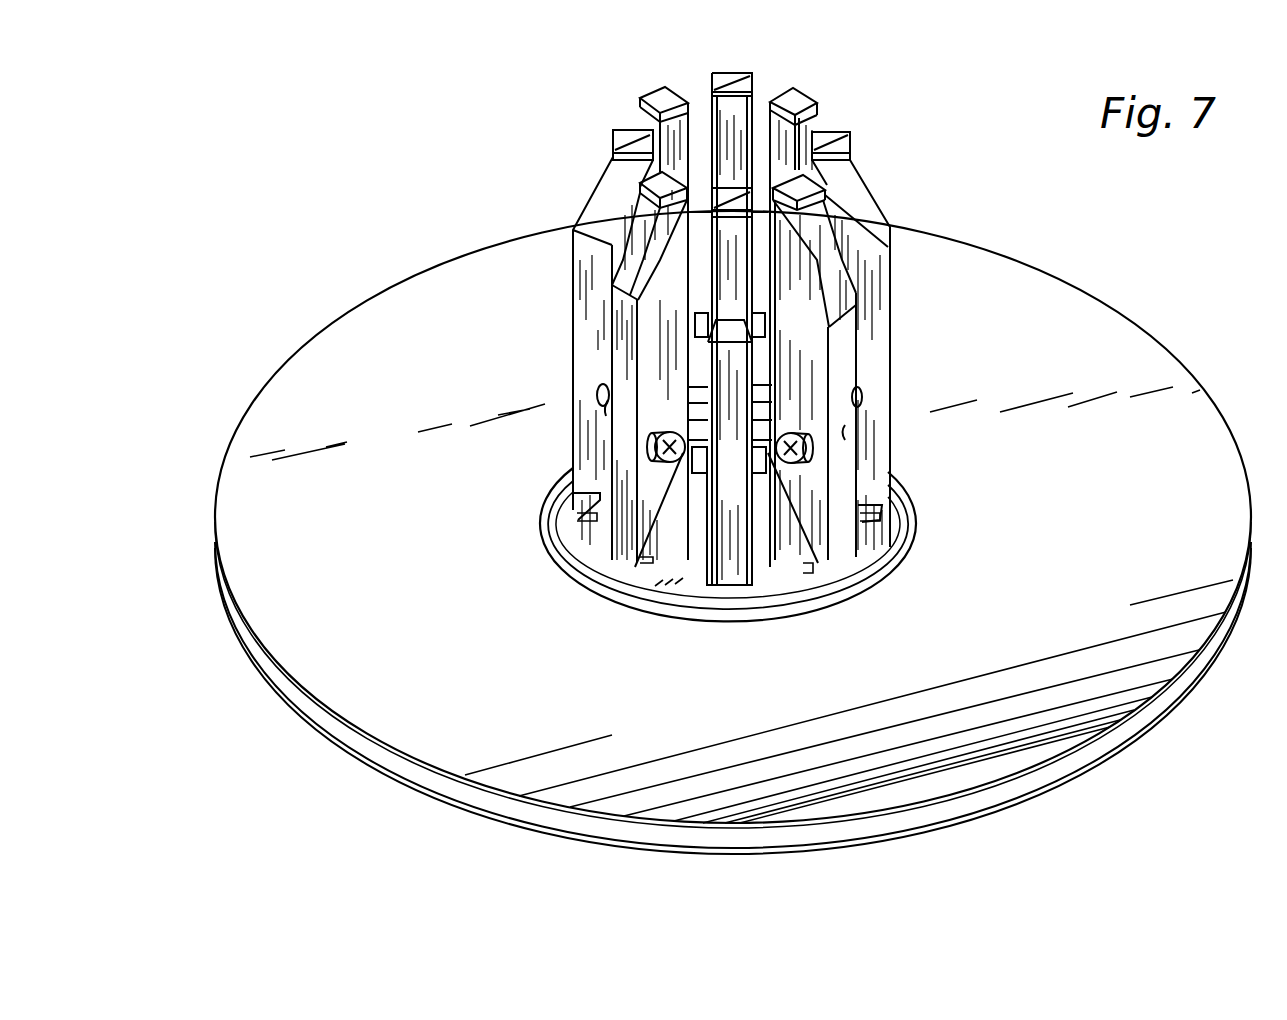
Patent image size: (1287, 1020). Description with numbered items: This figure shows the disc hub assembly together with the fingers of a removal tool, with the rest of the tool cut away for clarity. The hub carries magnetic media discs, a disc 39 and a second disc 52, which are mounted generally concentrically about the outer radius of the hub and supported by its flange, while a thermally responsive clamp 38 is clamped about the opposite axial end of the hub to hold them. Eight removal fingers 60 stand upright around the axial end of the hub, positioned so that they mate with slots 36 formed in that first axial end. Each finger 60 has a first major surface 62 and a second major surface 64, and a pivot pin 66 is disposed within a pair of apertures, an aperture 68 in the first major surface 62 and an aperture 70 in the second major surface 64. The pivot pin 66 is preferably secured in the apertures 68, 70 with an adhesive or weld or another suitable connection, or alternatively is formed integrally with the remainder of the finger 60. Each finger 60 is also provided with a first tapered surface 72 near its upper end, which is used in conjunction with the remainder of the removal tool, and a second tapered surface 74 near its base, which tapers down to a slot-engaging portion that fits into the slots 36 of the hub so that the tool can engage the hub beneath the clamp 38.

The slots 36 is at (592, 527).
The thermally responsive clamp 38 is at (903, 548).
The magnetic media disc 39 is at (1178, 526).
The disc 52 is at (1184, 700).
The removal fingers 60 is at (638, 103).
The first major surface 62 is at (622, 254).
The second major surface 64 is at (845, 205).
The pivot pin 66 is at (605, 402).
The aperture 68 is at (858, 395).
The aperture 70 is at (604, 390).
The first tapered surface 72 is at (642, 102).
The second tapered surface 74 is at (592, 493).